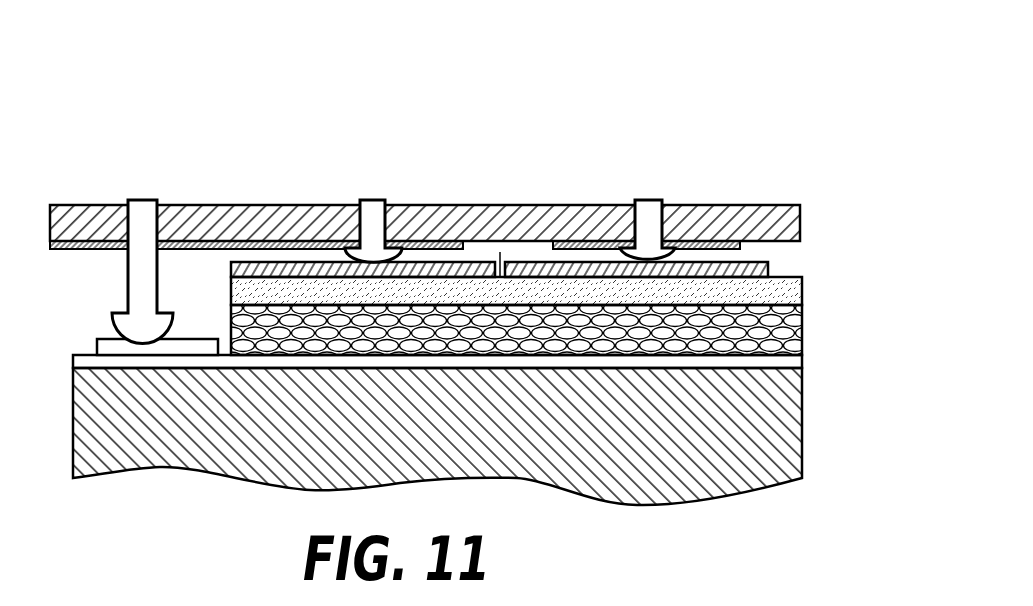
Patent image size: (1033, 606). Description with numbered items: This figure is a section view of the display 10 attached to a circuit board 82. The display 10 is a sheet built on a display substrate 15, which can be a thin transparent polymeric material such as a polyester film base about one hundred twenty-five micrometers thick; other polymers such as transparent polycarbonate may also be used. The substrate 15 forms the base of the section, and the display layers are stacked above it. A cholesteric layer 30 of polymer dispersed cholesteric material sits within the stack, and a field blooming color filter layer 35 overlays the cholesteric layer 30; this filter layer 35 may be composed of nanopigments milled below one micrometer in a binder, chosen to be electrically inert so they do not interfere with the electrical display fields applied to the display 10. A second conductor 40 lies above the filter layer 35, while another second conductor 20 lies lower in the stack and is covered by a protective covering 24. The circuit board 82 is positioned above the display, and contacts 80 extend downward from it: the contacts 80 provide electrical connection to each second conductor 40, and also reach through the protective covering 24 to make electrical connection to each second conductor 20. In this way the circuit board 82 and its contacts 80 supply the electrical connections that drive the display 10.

The display 10 is at (196, 76).
The display substrate 15 is at (803, 440).
The second conductor 20 is at (803, 358).
The protective covering 24 is at (105, 337).
The cholesteric layer 30 is at (803, 336).
The field blooming color filter layer 35 is at (803, 292).
The second conductor 40 is at (770, 265).
The contacts 80 is at (140, 200).
The circuit board 82 is at (780, 205).